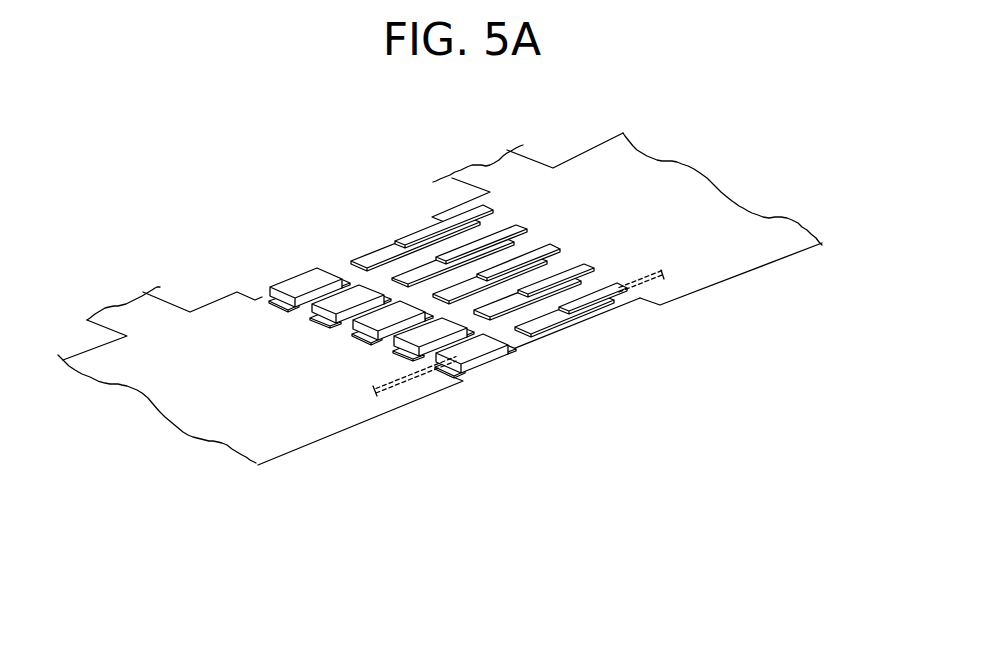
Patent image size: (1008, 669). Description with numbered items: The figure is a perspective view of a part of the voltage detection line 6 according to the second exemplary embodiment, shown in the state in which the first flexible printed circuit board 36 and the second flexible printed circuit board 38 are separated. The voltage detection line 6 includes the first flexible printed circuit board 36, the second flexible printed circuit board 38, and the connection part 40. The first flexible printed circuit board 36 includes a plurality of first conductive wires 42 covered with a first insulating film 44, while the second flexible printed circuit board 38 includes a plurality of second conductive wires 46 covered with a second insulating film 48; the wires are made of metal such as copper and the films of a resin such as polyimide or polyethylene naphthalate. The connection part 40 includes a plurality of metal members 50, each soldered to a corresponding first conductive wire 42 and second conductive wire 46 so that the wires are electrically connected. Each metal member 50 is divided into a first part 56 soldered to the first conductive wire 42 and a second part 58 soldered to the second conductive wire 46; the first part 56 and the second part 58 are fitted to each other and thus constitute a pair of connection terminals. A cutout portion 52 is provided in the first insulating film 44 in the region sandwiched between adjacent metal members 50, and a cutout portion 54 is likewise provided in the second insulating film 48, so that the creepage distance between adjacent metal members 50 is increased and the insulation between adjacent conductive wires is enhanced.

The voltage detection line 6 is at (560, 565).
The first flexible printed circuit board 36 is at (302, 452).
The second flexible printed circuit board 38 is at (800, 257).
The connection part 40 is at (528, 347).
The first conductive wire 42 is at (427, 377).
The first insulating film 44 is at (340, 407).
The second conductive wire 46 is at (643, 293).
The second insulating film 48 is at (707, 270).
The metal member 50 is at (354, 229).
The cutout portion 52 is at (287, 303).
The cutout portion 54 is at (463, 238).
The first part 56 is at (357, 180).
The second part 58 is at (380, 250).